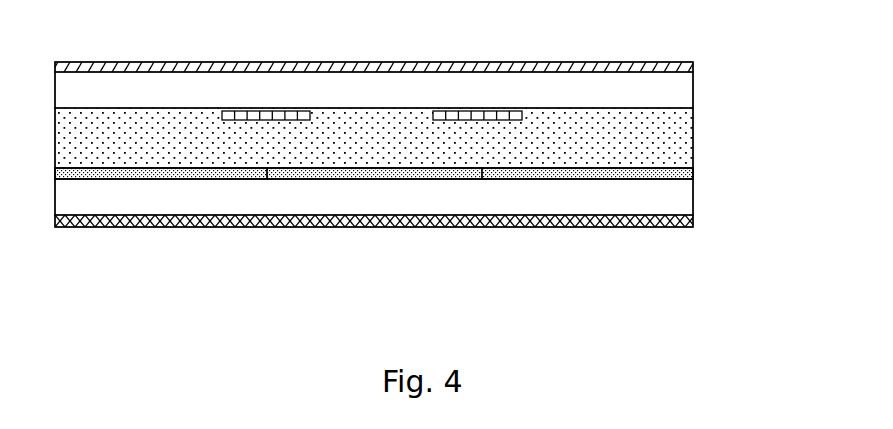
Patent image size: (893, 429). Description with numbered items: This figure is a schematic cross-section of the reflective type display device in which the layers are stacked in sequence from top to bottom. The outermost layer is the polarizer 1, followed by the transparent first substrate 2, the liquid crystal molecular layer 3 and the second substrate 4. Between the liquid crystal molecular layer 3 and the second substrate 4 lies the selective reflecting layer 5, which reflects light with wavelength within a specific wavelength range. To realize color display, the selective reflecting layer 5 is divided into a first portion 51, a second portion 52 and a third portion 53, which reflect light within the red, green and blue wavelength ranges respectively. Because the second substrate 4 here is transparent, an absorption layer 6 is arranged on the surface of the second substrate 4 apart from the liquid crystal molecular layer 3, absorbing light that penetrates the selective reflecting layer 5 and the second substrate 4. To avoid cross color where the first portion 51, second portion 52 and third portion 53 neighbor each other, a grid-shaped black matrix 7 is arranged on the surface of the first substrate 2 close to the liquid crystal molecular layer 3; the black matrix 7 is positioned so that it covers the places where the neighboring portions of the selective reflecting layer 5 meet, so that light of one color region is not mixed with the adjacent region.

The polarizer 1 is at (670, 67).
The first substrate 2 is at (670, 97).
The liquid crystal molecular layer 3 is at (670, 144).
The second substrate 4 is at (670, 198).
The selective reflecting layer 5 is at (374, 252).
The first portion 51 is at (240, 172).
The second portion 52 is at (383, 175).
The third portion 53 is at (576, 230).
The absorption layer 6 is at (670, 222).
The black matrix 7 is at (487, 115).